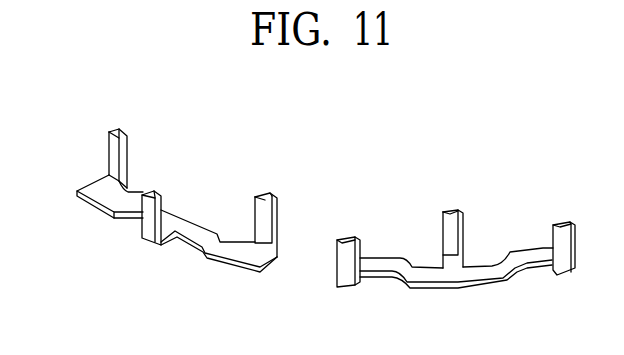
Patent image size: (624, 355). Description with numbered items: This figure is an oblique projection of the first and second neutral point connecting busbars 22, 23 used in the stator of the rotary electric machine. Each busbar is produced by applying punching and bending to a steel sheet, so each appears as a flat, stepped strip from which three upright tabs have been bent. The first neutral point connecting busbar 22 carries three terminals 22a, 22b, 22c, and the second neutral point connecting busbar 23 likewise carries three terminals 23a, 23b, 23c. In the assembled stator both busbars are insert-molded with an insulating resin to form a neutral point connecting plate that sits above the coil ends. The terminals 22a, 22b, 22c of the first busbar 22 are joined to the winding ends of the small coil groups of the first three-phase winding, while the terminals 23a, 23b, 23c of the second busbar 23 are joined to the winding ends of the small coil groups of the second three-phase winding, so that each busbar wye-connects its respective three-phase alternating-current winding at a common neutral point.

The first neutral point connecting busbar 22 is at (166, 200).
The terminal of the first neutral point connecting busbar 22a is at (111, 145).
The terminal of the first neutral point connecting busbar 22b is at (157, 195).
The terminal of the first neutral point connecting busbar 22c is at (268, 200).
The second neutral point connecting busbar 23 is at (456, 248).
The terminal of the second neutral point connecting busbar 23a is at (353, 236).
The terminal of the second neutral point connecting busbar 23b is at (452, 210).
The terminal of the second neutral point connecting busbar 23c is at (557, 222).